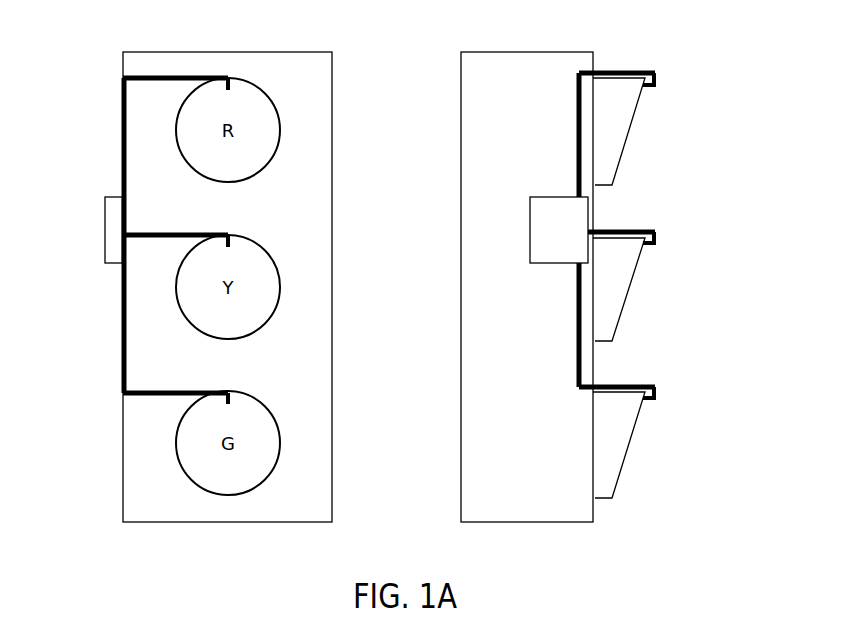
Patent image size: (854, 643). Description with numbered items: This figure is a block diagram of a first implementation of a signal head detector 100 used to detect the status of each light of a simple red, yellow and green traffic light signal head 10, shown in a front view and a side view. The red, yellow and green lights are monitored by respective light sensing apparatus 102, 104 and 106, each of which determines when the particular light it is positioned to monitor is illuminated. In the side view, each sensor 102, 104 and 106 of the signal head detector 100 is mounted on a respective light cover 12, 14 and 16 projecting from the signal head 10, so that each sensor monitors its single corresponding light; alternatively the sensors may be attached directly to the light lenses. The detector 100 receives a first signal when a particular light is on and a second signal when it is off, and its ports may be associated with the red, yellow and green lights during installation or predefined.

The traffic light signal head 10 is at (237, 52).
The light cover 12 is at (635, 127).
The light cover 14 is at (640, 281).
The light cover 16 is at (633, 445).
The signal head detector 100 is at (115, 195).
The light sensing apparatus 102 is at (152, 73).
The light sensing apparatus 104 is at (155, 232).
The light sensing apparatus 106 is at (143, 388).